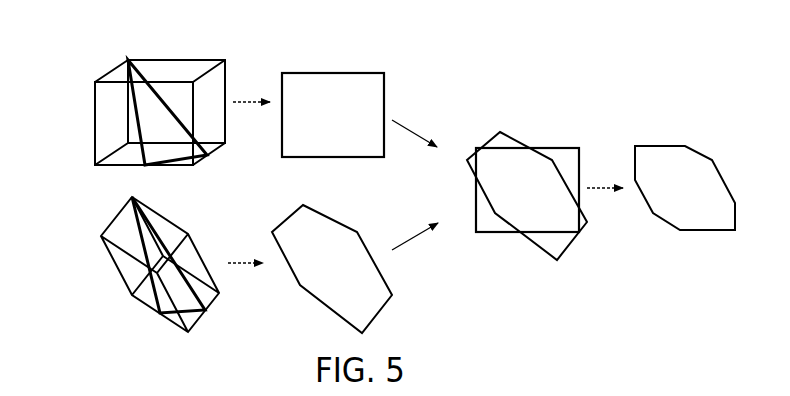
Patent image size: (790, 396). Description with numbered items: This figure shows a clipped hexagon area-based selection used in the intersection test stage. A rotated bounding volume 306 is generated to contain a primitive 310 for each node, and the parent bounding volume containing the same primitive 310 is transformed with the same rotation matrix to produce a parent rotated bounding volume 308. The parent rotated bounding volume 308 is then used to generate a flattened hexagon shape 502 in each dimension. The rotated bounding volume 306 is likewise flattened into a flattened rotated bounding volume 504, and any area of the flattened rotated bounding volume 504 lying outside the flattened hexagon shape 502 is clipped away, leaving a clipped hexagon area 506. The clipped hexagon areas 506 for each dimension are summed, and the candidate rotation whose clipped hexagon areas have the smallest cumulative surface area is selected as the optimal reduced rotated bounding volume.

The rotated bounding volume 306 is at (177, 60).
The parent rotated bounding volume 308 is at (116, 263).
The primitive 310 is at (135, 115).
The flattened hexagon shape 502 is at (377, 314).
The flattened rotated bounding volume 504 is at (332, 73).
The clipped hexagon area 506 is at (662, 145).